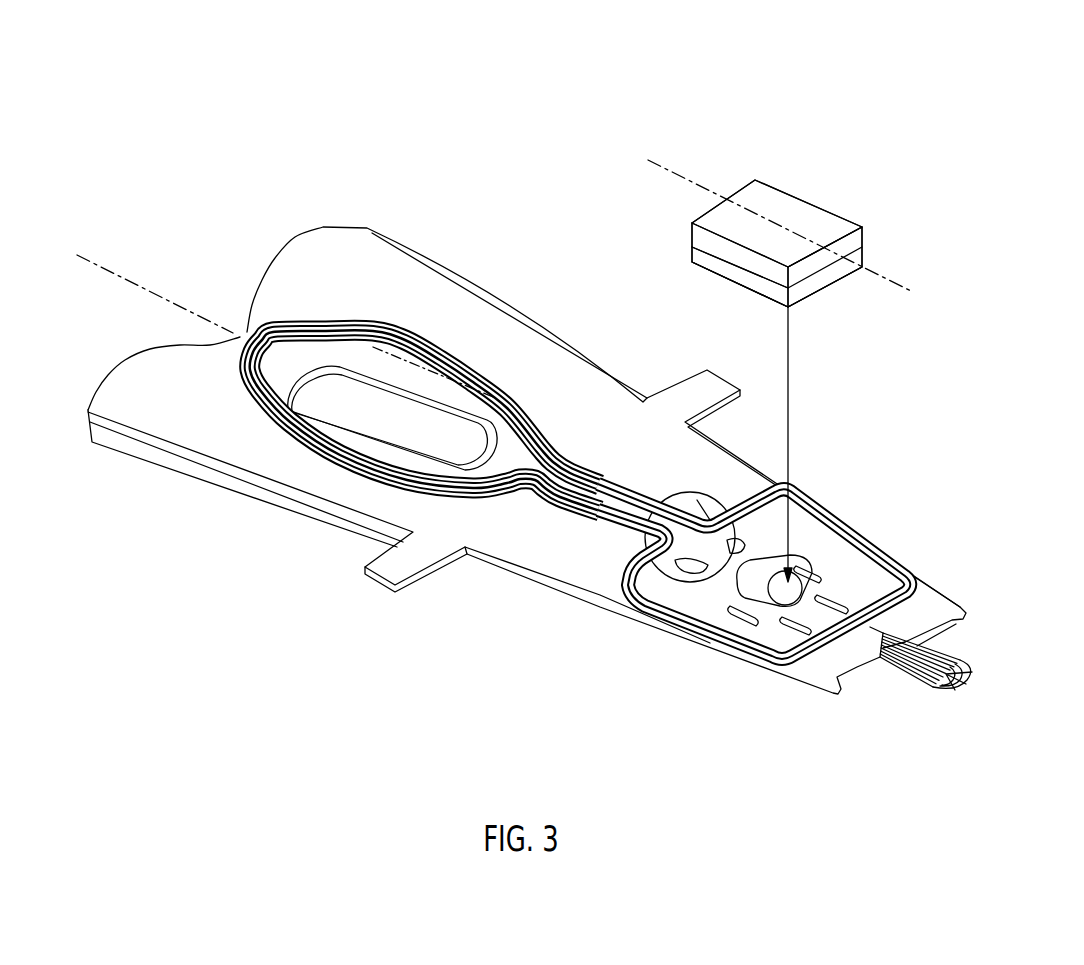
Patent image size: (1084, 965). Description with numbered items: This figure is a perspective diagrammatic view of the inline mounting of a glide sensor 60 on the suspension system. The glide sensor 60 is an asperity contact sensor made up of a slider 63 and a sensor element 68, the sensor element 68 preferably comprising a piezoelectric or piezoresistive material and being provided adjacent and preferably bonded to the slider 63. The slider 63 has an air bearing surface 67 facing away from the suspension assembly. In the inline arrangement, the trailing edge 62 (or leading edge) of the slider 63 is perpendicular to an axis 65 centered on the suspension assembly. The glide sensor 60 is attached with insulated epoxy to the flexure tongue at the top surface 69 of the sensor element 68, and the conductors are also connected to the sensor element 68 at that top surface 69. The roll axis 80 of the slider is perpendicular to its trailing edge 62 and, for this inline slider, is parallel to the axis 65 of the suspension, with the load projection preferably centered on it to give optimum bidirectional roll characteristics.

The glide sensor 60 is at (745, 77).
The trailing edge 62 is at (853, 247).
The slider 63 is at (700, 237).
The axis 65 is at (134, 295).
The air bearing surface 67 is at (777, 207).
The sensor element 68 is at (715, 265).
The top surface 69 is at (797, 307).
The roll axis 80 is at (691, 190).